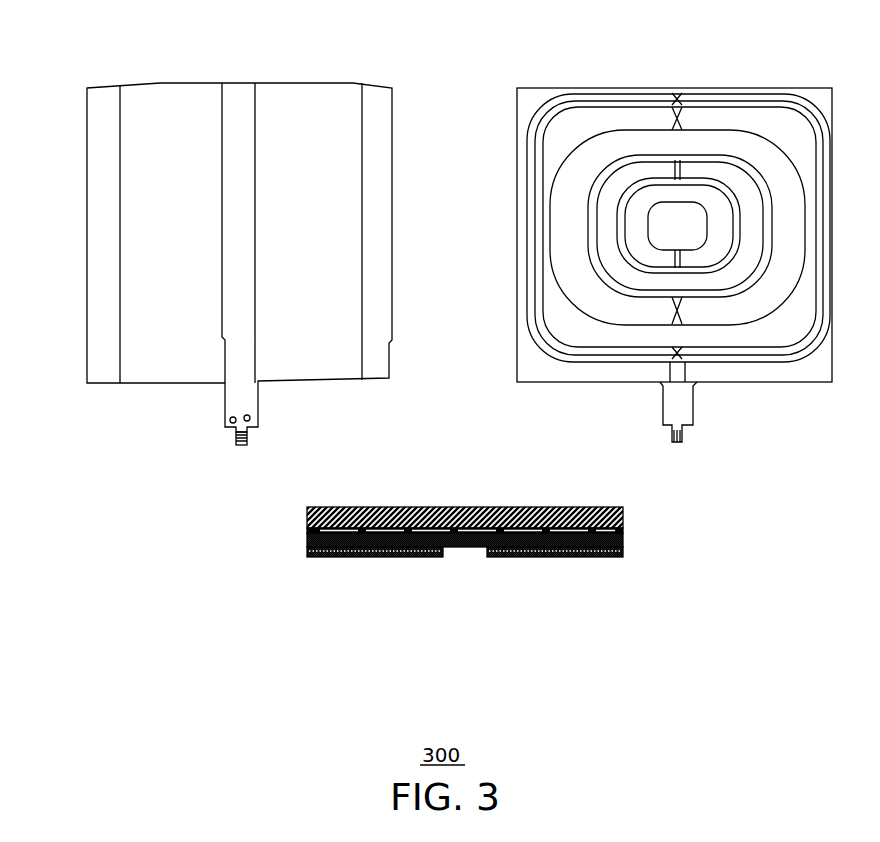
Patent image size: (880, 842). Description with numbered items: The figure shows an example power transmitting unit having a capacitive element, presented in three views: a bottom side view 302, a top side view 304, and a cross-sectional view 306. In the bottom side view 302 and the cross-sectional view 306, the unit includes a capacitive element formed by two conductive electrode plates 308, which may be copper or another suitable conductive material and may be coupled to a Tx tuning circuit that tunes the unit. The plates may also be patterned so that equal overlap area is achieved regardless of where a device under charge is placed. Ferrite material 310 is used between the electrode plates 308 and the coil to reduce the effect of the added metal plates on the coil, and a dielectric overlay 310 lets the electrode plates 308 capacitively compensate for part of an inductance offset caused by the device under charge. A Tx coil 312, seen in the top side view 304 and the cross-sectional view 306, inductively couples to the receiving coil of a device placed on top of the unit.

The bottom side view 302 is at (150, 50).
The top side view 304 is at (597, 48).
The cross-sectional view 306 is at (569, 576).
The conductive electrode plates 308 is at (283, 203).
The ferrite material 310 is at (380, 388).
The Tx coil 312 is at (767, 386).